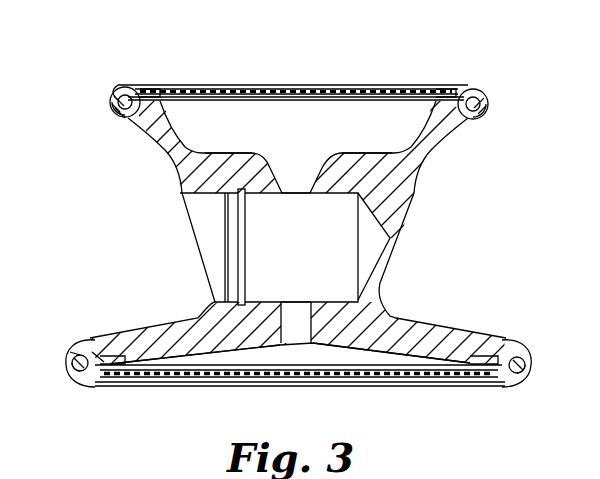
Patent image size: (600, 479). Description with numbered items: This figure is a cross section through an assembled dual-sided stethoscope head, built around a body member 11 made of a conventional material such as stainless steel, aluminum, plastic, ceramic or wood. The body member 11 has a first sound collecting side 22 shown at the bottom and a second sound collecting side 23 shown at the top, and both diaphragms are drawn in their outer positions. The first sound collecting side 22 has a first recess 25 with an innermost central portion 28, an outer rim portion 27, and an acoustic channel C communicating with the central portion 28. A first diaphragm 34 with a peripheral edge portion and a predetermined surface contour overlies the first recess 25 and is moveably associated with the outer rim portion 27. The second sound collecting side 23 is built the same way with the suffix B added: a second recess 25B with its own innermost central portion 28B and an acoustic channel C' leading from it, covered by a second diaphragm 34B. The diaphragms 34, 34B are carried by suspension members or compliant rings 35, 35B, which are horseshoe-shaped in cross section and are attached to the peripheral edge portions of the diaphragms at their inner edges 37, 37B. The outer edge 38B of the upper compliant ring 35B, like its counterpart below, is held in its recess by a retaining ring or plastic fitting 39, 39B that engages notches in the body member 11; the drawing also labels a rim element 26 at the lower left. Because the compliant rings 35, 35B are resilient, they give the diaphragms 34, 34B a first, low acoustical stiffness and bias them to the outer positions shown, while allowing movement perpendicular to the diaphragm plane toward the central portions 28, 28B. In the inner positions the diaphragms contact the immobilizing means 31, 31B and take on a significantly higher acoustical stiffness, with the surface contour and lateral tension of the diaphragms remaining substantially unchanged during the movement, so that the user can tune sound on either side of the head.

The body member 11 is at (412, 205).
The first sound collecting side 22 is at (420, 422).
The second sound collecting side 23 is at (125, 152).
The first recess 25 is at (207, 353).
The second recess 25B is at (219, 154).
The lower left rim member 26 is at (72, 362).
The outer rim portion 27 is at (99, 355).
The innermost central portion 28 is at (352, 350).
The innermost central portion 28B is at (372, 154).
The immobilizing means 31 is at (470, 367).
The immobilizing means 31B is at (148, 100).
The first diaphragm 34 is at (285, 377).
The second diaphragm 34B is at (289, 90).
The compliant ring 35 is at (88, 388).
The compliant ring 35B is at (130, 74).
The inner edge 37 is at (118, 358).
The inner edge 37B is at (158, 92).
The outer edge 38B is at (112, 103).
The retaining ring 39 is at (522, 353).
The retaining ring 39B is at (483, 100).
The acoustic channel C is at (289, 277).
The acoustic channel C' is at (301, 218).